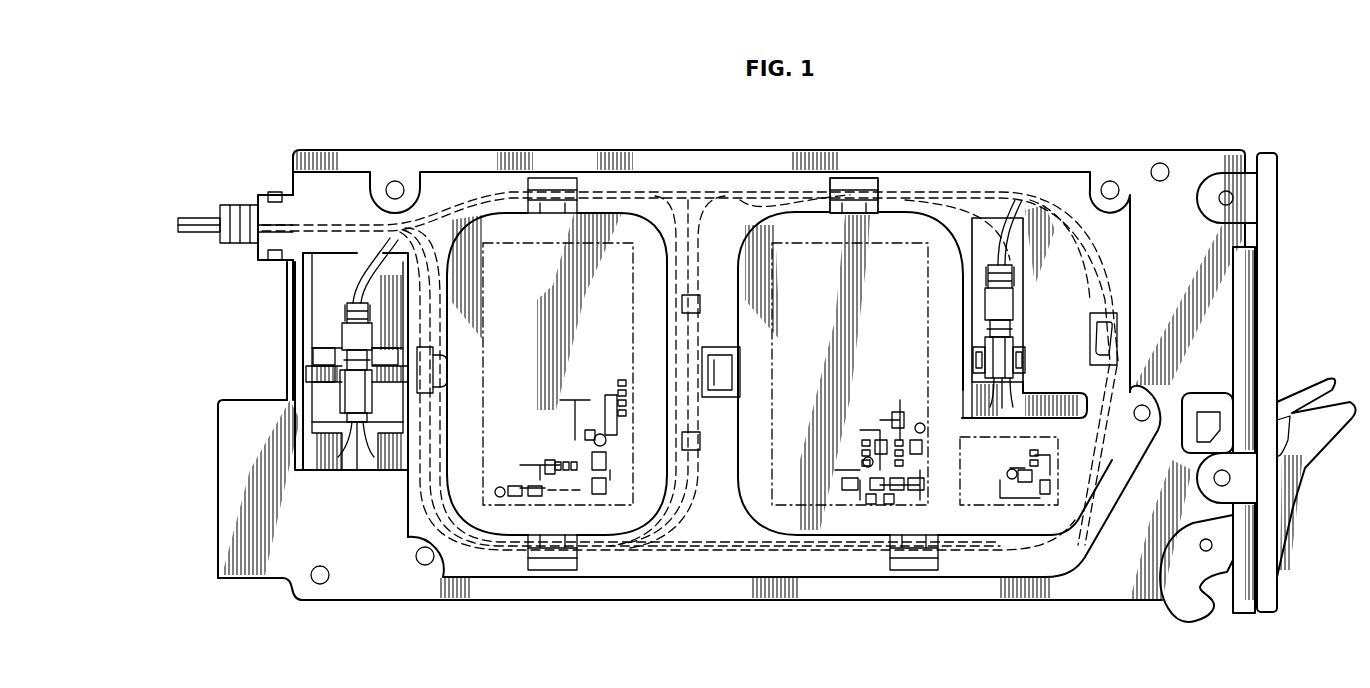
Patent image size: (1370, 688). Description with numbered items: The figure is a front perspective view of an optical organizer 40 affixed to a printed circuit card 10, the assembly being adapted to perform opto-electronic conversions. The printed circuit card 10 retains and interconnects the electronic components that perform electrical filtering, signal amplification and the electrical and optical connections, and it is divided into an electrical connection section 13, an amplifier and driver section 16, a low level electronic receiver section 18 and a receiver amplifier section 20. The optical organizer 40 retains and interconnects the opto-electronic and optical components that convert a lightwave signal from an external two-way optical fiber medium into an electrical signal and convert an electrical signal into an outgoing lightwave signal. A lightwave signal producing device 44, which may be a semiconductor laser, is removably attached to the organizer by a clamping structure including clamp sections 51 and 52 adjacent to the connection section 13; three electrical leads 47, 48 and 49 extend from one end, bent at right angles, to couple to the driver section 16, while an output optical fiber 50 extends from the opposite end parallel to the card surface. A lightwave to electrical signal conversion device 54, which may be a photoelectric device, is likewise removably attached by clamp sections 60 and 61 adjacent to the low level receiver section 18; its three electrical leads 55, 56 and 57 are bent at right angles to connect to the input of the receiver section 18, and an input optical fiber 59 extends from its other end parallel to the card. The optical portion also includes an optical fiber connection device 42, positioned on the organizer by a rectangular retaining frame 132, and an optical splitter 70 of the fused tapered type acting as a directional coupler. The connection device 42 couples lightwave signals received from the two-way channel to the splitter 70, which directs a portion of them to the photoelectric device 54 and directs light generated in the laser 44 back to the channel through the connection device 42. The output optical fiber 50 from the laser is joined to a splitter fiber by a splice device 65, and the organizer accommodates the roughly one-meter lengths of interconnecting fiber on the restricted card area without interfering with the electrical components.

The printed circuit card 10 is at (388, 596).
The electrical connection section 13 is at (232, 452).
The amplifier and driver section 16 is at (503, 243).
The low level electronic receiver section 18 is at (1003, 506).
The receiver amplifier section 20 is at (797, 243).
The optical organizer 40 is at (684, 186).
The optical fiber connection device 42 is at (242, 210).
The lightwave signal producing device 44 is at (352, 397).
The electrical lead 47 is at (338, 457).
The electrical lead 48 is at (357, 470).
The electrical lead 49 is at (374, 457).
The output optical fiber 50 is at (355, 272).
The clamp section 51 is at (400, 377).
The clamp section 52 is at (313, 374).
The lightwave to electrical signal conversion device 54 is at (993, 352).
The electrical lead 55 is at (990, 407).
The electrical lead 56 is at (1002, 408).
The electrical lead 57 is at (1013, 407).
The input optical fiber 59 is at (1013, 218).
The clamp section 60 is at (975, 362).
The clamp section 61 is at (1022, 362).
The splice device 65 is at (887, 163).
The optical splitter 70 is at (700, 332).
The retaining frame 132 is at (262, 193).